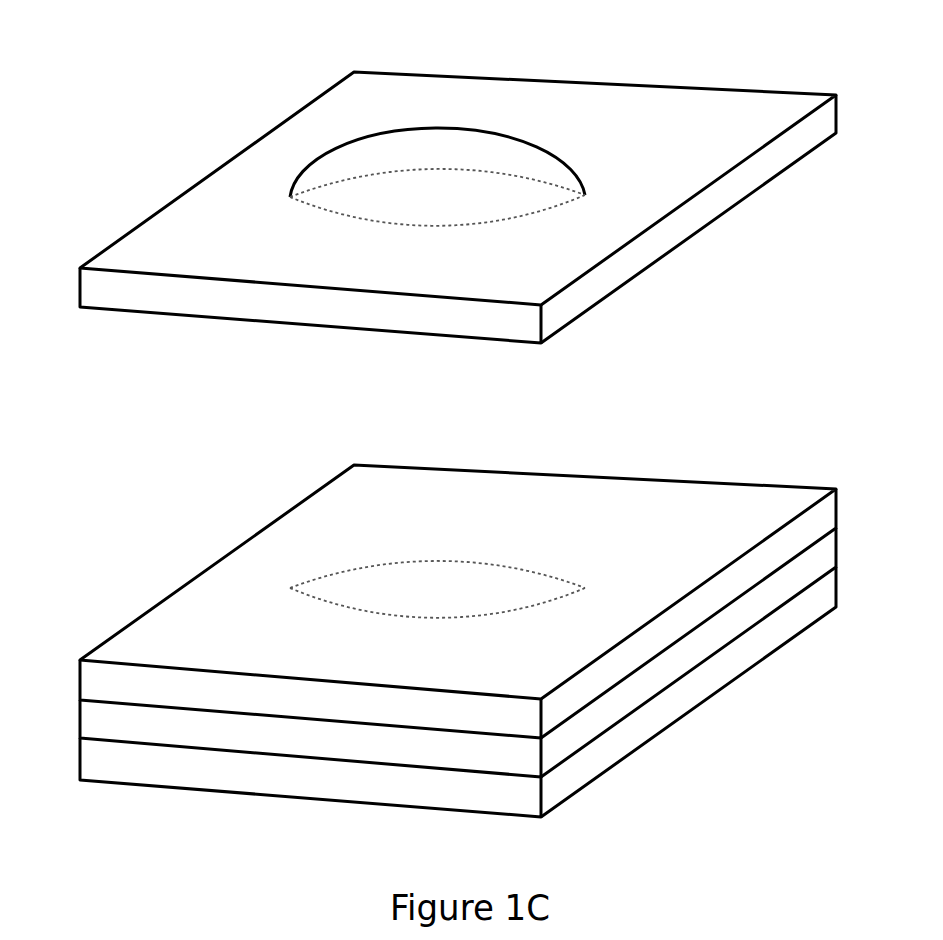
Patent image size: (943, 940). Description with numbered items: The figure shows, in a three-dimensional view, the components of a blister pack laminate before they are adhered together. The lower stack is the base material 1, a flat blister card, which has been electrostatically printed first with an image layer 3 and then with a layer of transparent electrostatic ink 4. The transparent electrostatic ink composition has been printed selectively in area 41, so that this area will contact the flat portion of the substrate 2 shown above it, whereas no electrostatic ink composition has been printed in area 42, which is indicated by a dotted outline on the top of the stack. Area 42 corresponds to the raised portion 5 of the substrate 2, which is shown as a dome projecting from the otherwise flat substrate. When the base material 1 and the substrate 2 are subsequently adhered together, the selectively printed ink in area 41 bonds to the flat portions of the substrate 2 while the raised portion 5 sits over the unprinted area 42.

The base material 1 is at (80, 762).
The substrate 2 is at (80, 288).
The image layer 3 is at (80, 722).
The transparent electrostatic ink 4 is at (80, 680).
The raised portion 5 is at (460, 122).
The area 41 is at (628, 495).
The area 42 is at (442, 583).